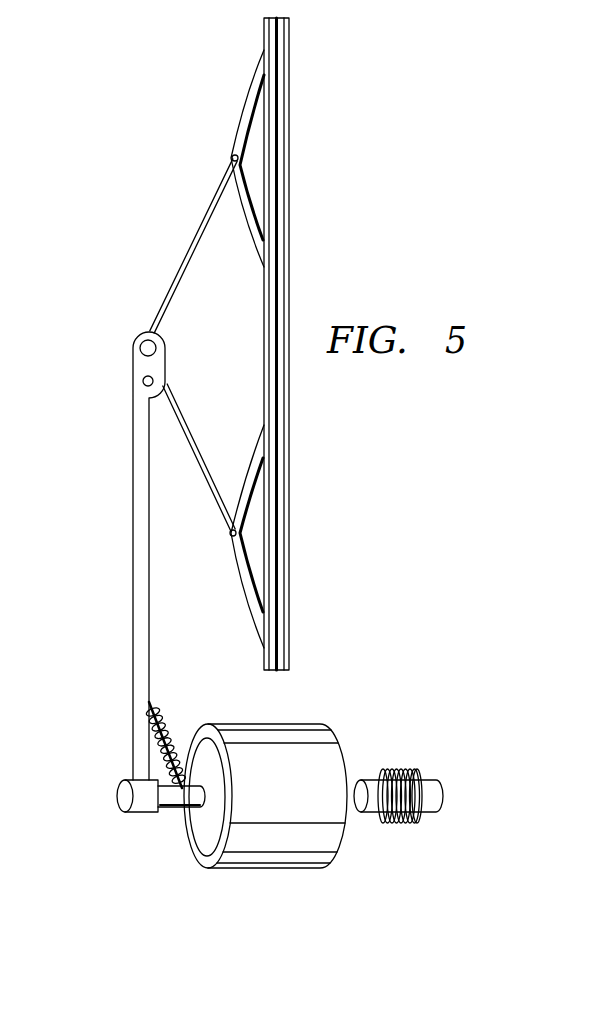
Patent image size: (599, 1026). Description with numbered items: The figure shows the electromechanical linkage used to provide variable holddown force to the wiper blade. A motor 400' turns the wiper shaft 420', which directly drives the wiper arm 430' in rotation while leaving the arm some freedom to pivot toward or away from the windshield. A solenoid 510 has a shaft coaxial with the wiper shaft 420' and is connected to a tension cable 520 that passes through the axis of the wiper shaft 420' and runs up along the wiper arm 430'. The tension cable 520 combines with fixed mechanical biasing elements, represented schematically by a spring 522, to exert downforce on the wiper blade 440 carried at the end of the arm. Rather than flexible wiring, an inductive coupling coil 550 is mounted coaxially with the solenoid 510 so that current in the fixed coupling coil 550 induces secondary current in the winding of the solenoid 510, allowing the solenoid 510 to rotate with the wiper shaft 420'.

The wiper blade 440 is at (314, 124).
The wiper arm 430' is at (126, 492).
The tension cable 520 is at (149, 705).
The spring 522 is at (153, 762).
The wiper shaft 420' is at (160, 853).
The motor 400' is at (265, 838).
The solenoid 510 is at (428, 815).
The inductive coupling coil 550 is at (398, 770).